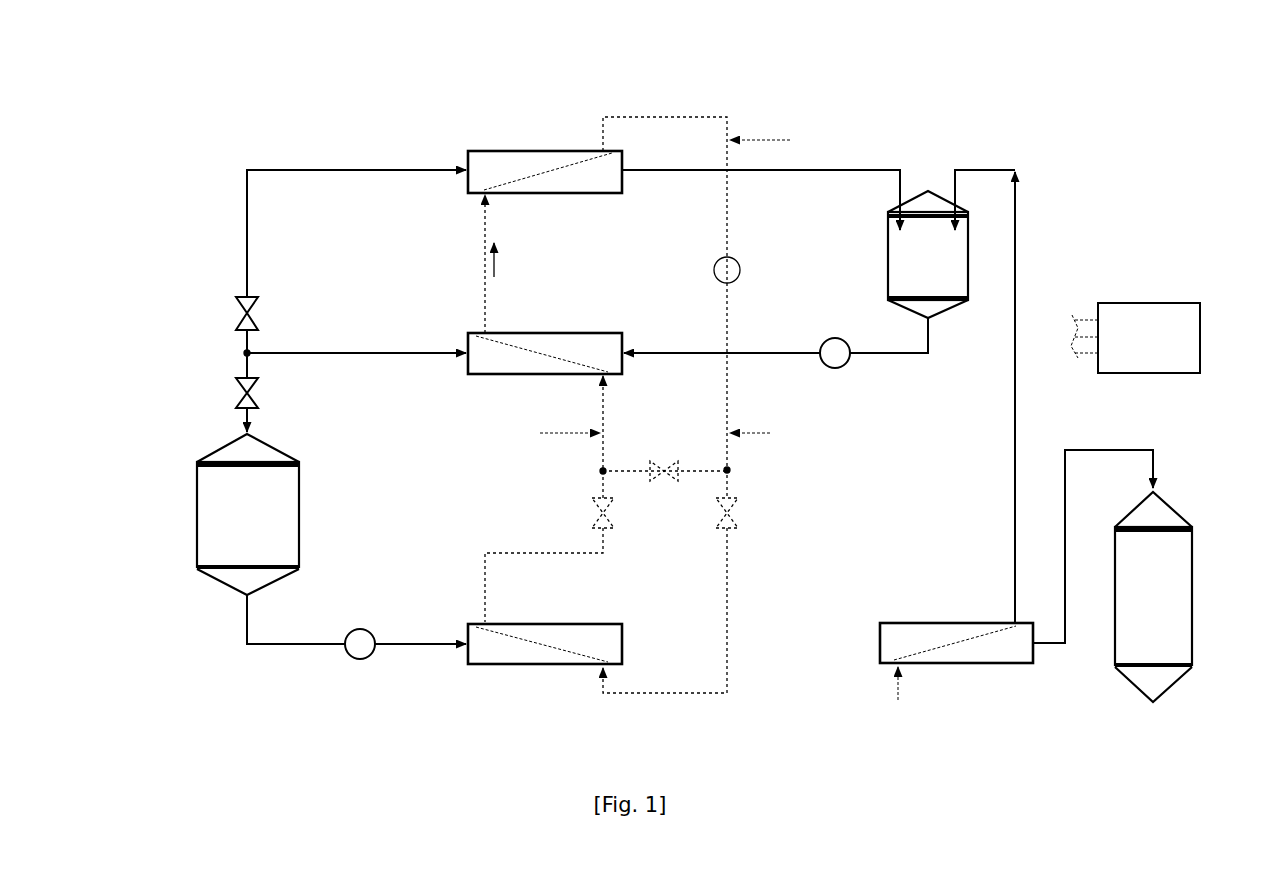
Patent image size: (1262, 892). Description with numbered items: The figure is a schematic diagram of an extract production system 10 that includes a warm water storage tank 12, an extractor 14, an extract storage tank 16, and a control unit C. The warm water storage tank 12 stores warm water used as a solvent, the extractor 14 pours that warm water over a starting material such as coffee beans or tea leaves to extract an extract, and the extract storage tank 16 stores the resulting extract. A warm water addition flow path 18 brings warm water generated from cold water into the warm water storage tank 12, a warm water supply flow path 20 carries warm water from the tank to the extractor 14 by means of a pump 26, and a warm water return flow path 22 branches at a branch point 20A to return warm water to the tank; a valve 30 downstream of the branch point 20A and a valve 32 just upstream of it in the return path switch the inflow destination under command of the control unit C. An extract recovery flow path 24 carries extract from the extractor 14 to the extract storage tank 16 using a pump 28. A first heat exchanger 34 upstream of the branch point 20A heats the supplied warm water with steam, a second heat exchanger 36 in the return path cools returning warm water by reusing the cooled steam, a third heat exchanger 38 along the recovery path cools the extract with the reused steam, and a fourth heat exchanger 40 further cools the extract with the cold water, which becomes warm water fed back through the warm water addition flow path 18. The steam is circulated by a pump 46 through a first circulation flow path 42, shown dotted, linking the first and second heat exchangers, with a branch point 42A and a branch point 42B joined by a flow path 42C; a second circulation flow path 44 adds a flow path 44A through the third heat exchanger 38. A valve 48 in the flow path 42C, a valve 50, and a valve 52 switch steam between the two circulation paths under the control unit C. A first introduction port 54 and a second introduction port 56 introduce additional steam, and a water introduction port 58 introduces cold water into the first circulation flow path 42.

The extract production system 10 is at (1142, 112).
The warm water storage tank 12 is at (970, 250).
The extractor 14 is at (280, 447).
The extract storage tank 16 is at (1170, 505).
The warm water addition flow path 18 is at (904, 690).
The warm water supply flow path 20 is at (893, 358).
The branch point 20A is at (243, 352).
The warm water return flow path 22 is at (245, 252).
The extract recovery flow path 24 is at (245, 622).
The pump 26 is at (835, 370).
The pump 28 is at (365, 628).
The valve 30 is at (258, 390).
The valve 32 is at (258, 311).
The first heat exchanger 34 is at (553, 330).
The second heat exchanger 36 is at (530, 148).
The third heat exchanger 38 is at (566, 622).
The fourth heat exchanger 40 is at (940, 622).
The first circulation flow path 42 is at (688, 116).
The branch point 42A is at (731, 470).
The branch point 42B is at (598, 471).
The flow path 42C is at (700, 462).
The second circulation flow path 44 is at (735, 564).
The flow path 44A is at (520, 553).
The pump 46 is at (741, 268).
The valve 48 is at (667, 460).
The valve 50 is at (742, 509).
The valve 52 is at (595, 506).
The first introduction port 54 is at (753, 430).
The second introduction port 56 is at (570, 428).
The water introduction port 58 is at (758, 135).
The control unit C is at (1172, 300).